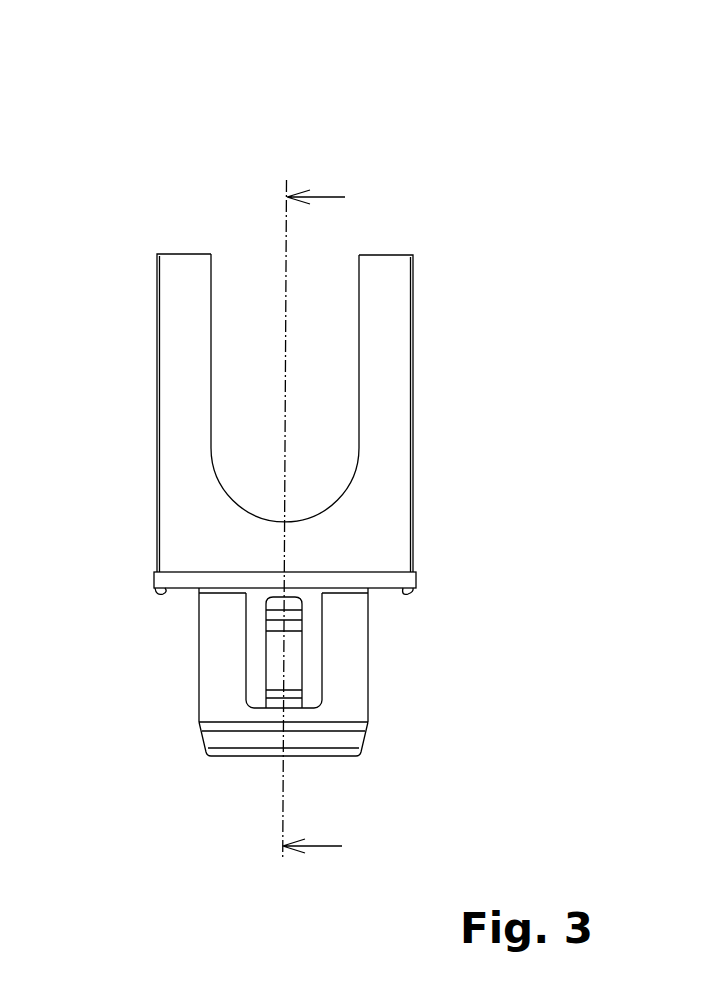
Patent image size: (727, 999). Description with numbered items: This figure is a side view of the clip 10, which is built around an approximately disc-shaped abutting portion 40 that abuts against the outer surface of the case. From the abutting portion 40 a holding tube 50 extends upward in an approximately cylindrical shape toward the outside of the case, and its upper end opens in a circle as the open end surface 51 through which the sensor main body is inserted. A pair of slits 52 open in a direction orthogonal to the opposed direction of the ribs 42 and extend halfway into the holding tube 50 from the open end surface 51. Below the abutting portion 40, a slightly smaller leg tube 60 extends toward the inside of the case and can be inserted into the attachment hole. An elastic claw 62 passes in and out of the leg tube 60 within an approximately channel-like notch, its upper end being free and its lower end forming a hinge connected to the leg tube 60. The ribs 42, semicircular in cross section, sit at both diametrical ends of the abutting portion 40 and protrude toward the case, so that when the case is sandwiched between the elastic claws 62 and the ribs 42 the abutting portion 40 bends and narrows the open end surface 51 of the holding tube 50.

The clip 10 is at (158, 78).
The abutting portion 40 is at (183, 588).
The ribs 42 is at (157, 592).
The holding tube 50 is at (400, 317).
The open end surface 51 is at (323, 268).
The slits 52 is at (335, 447).
The leg tube 60 is at (353, 672).
The elastic claw 62 is at (273, 670).